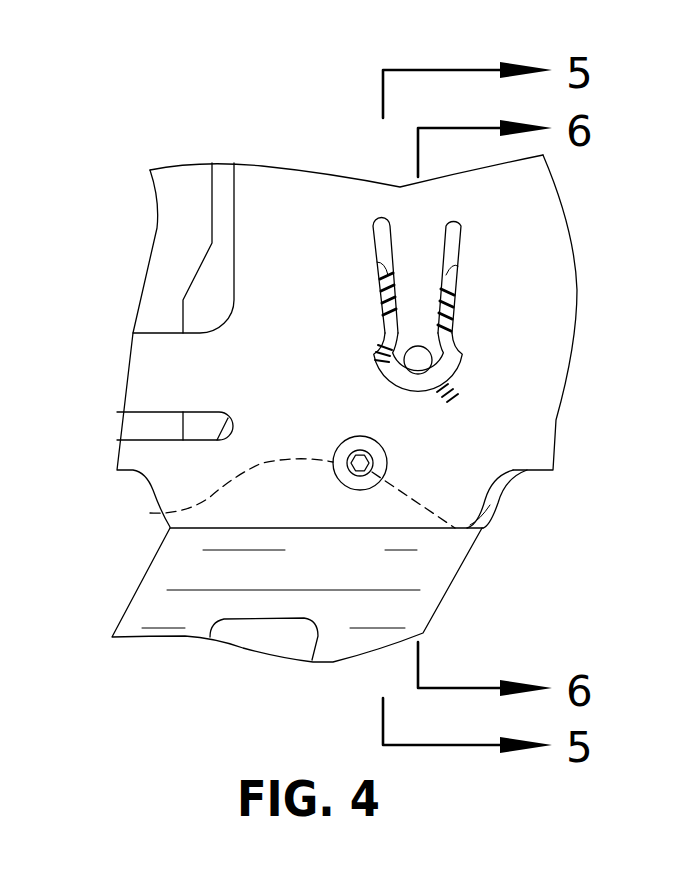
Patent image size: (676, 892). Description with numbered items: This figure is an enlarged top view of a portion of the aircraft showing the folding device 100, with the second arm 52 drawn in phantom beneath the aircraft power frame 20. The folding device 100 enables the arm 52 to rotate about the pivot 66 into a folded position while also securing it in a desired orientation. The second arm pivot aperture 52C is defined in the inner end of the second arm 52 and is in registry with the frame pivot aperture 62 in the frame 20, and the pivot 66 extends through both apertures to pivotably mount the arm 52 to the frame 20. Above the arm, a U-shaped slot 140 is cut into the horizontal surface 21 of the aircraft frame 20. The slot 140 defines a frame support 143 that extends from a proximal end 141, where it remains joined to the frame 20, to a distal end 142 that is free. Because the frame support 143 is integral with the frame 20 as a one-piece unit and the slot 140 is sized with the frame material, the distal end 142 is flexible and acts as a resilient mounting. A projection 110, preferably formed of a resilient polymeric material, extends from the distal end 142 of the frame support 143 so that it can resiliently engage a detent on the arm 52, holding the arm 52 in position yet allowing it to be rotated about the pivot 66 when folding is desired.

The folding device 100 is at (163, 103).
The aircraft power frame 20 is at (334, 341).
The horizontal surface 21 is at (538, 190).
The U-shaped slot 140 is at (485, 280).
The proximal end 141 is at (381, 217).
The distal end 142 is at (420, 400).
The frame support 143 is at (457, 245).
The projection 110 is at (418, 360).
The pivot 66 is at (387, 463).
The frame pivot aperture 62 is at (150, 513).
The second arm 52 is at (332, 582).
The second arm pivot aperture 52C is at (462, 533).